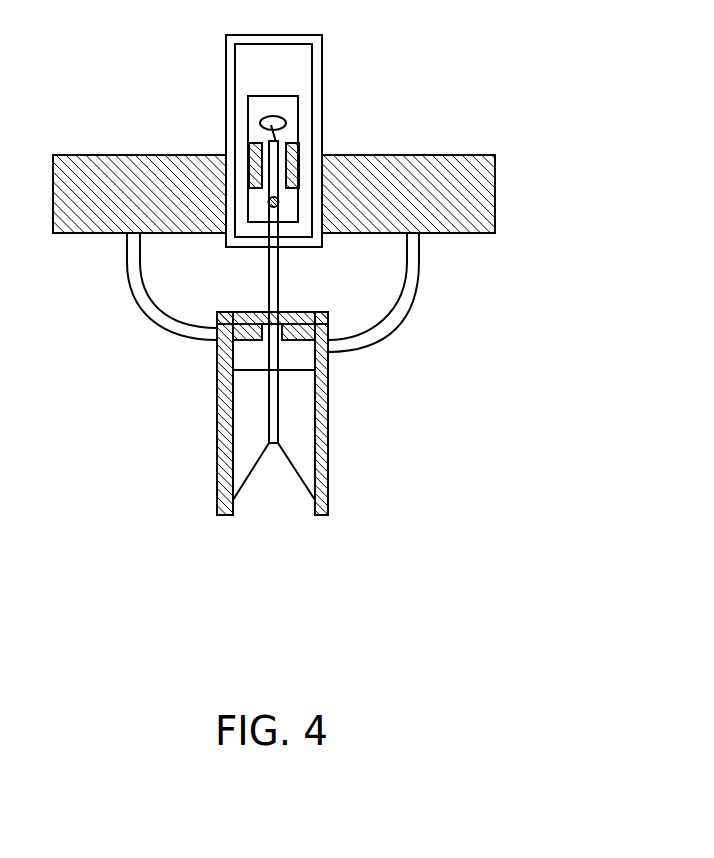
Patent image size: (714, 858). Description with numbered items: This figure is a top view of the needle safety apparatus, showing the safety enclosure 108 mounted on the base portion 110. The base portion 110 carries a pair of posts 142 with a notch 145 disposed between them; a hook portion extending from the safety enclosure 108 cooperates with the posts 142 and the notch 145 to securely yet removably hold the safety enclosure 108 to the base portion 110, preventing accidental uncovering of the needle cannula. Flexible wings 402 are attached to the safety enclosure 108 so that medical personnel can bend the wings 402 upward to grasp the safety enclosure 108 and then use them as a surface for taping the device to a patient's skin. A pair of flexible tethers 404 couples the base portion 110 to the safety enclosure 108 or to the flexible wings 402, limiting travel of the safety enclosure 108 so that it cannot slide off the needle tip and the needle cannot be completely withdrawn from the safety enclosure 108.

The safety enclosure 108 is at (396, 60).
The flexible wings 402 is at (497, 190).
The flexible tethers 404 is at (136, 294).
The base portion 110 is at (303, 397).
The notch 145 is at (288, 312).
The posts 142 is at (243, 343).